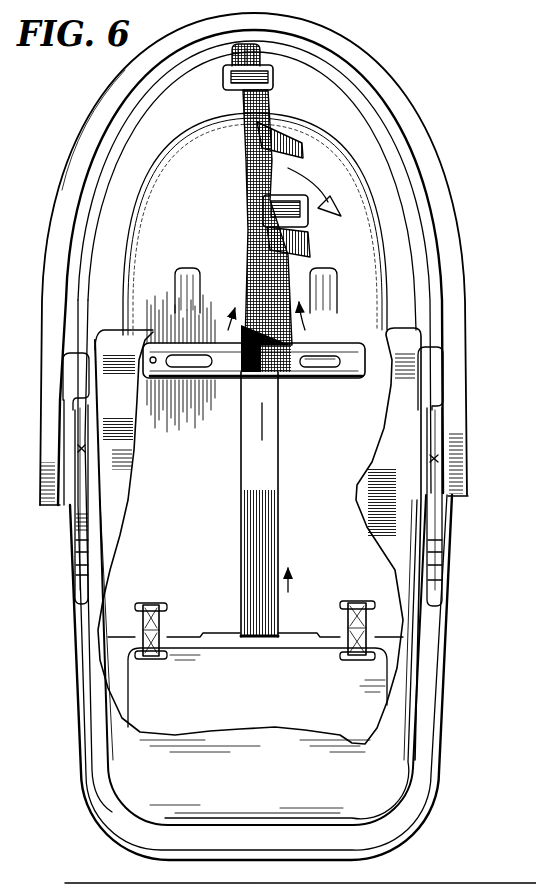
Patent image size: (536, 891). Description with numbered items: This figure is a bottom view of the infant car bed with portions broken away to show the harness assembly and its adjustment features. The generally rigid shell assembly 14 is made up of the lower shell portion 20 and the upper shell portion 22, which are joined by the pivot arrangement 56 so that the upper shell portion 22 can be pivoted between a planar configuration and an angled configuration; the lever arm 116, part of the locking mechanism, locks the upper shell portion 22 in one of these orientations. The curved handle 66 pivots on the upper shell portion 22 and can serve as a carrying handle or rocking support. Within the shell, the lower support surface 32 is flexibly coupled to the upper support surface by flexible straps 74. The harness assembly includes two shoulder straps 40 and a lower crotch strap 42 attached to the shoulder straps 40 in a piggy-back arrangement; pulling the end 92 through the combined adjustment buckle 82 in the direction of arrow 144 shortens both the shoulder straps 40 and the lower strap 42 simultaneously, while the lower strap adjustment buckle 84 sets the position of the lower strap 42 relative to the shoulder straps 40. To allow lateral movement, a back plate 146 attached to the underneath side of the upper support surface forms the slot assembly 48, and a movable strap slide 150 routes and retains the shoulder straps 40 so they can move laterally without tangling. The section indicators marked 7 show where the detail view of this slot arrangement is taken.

The shell assembly 14 is at (269, 259).
The upper shell portion 22 is at (384, 156).
The curved handle 66 is at (460, 230).
The lower shell portion 20 is at (418, 752).
The lower support surface 32 is at (260, 703).
The lever arm 116 is at (77, 388).
The pivot arrangement 56 is at (104, 577).
The combined adjustment buckle 82 is at (275, 83).
The end 92 is at (292, 138).
The lower strap adjustment buckle 84 is at (310, 226).
The arrow 144 is at (322, 193).
The shoulder straps 40 is at (264, 350).
The strap slide 150 is at (216, 355).
The back plate 146 is at (320, 374).
The upper strap slot assembly 48 is at (347, 382).
The lower crotch strap 42 is at (263, 550).
The section line 7- 7 is at (303, 284).
The flexible straps 74 is at (157, 633).